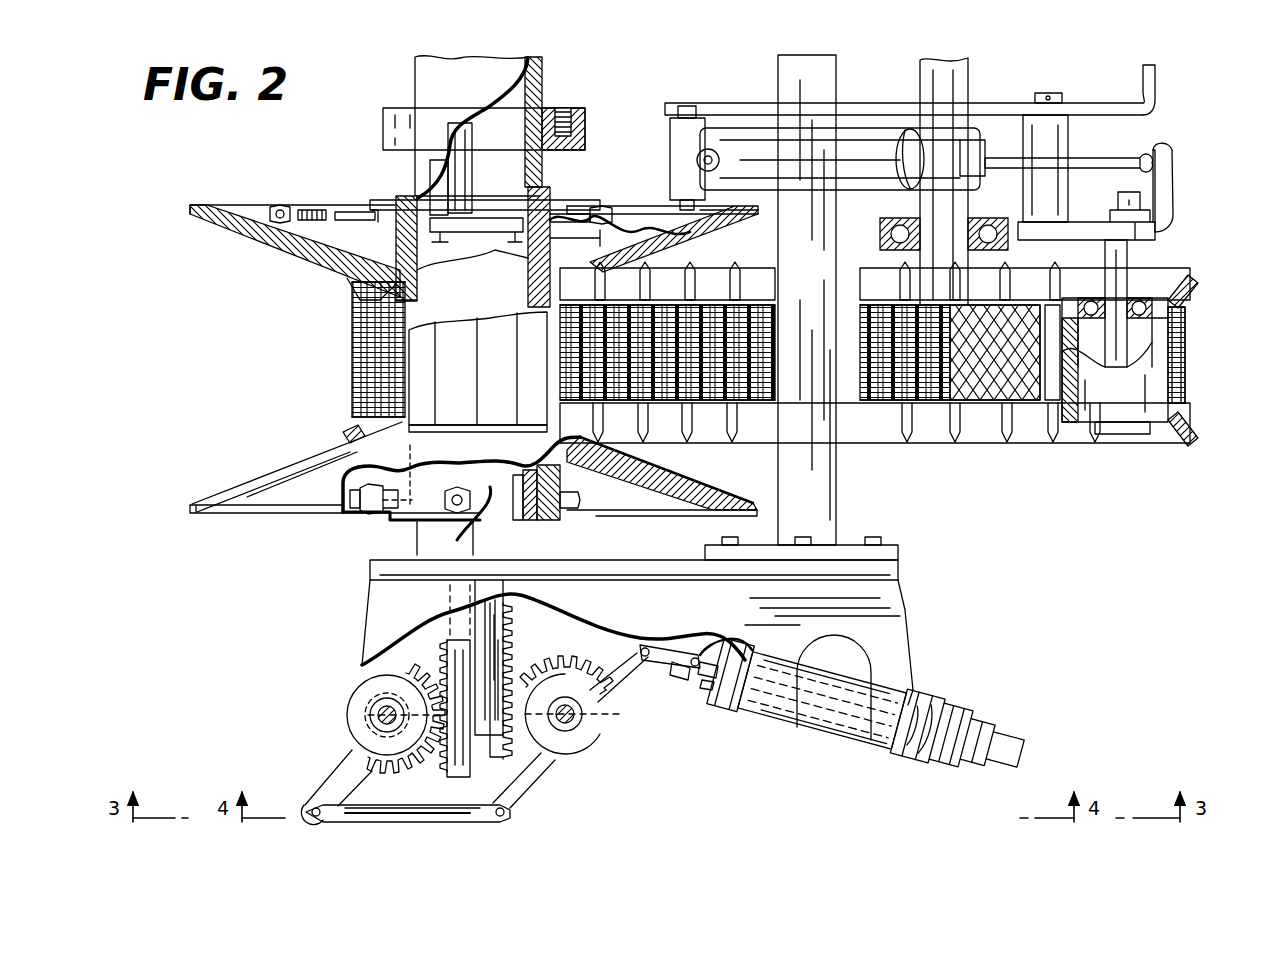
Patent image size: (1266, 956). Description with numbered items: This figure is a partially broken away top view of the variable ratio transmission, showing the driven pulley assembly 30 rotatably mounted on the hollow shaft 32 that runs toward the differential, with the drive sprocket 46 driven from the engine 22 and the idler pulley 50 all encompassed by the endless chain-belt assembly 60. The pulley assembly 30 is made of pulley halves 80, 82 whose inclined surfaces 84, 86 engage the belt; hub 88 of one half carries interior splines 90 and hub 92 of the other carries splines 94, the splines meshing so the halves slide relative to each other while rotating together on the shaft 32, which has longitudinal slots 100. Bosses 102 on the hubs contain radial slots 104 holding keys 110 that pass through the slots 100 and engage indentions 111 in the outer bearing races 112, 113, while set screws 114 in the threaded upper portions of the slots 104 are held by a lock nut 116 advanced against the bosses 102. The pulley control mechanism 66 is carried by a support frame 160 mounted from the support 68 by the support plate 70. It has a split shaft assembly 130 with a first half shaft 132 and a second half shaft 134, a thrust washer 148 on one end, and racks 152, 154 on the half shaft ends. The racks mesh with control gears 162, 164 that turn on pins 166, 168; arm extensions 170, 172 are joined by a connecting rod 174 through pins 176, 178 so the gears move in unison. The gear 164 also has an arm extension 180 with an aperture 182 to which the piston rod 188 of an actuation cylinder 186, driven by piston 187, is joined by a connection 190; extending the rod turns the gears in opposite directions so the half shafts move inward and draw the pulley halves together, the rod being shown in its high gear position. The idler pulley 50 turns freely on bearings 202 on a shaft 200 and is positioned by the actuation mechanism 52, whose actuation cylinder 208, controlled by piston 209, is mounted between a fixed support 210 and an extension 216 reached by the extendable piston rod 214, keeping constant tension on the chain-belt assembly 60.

The engine 22 is at (922, 258).
The variable effective diameter pulley assembly 30 is at (265, 538).
The hollow shaft 32 is at (430, 150).
The drive sprocket 46 is at (940, 420).
The idler pulley 50 is at (1083, 405).
The idler pulley actuation mechanism 52 is at (1205, 197).
The endless chain-belt assembly 60 is at (340, 360).
The pulley control mechanism 66 is at (258, 722).
The support 68 is at (838, 462).
The support plate 70 is at (897, 553).
The pulley half 80 is at (232, 506).
The pulley half 82 is at (222, 228).
The belt engaging inclined surface 84 is at (288, 470).
The belt engaging inclined surface 86 is at (288, 245).
The hub 88 is at (362, 480).
The splines 90 is at (447, 373).
The hub 92 is at (545, 212).
The splines 94 is at (417, 405).
The slots 100 is at (512, 278).
The bosses 102 is at (377, 514).
The radial slots 104 is at (413, 460).
The keys 110 is at (350, 210).
The indentions 111 is at (562, 238).
The outer bearing race 112 is at (553, 500).
The outer bearing race 113 is at (447, 240).
The set screws 114 is at (310, 208).
The lock nut 116 is at (283, 205).
The split shaft assembly 130 is at (487, 758).
The first half shaft 132 is at (454, 612).
The second half shaft 134 is at (522, 580).
The thrust washer 148 is at (404, 538).
The rack 152 is at (440, 636).
The rack 154 is at (517, 640).
The support frame 160 is at (905, 633).
The control gear 162 is at (412, 668).
The control gear 164 is at (567, 663).
The pin 166 is at (372, 717).
The pin 168 is at (578, 720).
The arm extension 170 is at (336, 750).
The arm extension 172 is at (538, 800).
The connecting rod 174 is at (421, 806).
The pin 176 is at (320, 800).
The pin 178 is at (535, 792).
The arm extension 180 is at (652, 648).
The aperture 182 is at (738, 652).
The actuation cylinder 186 is at (828, 730).
The piston 187 is at (928, 752).
The piston rod 188 is at (712, 690).
The connection 190 is at (678, 672).
The shaft 200 is at (1130, 255).
The bearings 202 is at (1140, 302).
The actuation cylinder 208 is at (754, 132).
The piston 209 is at (910, 160).
The fixed support 210 is at (670, 150).
The piston rod 214 is at (1112, 160).
The extension 216 is at (1160, 152).